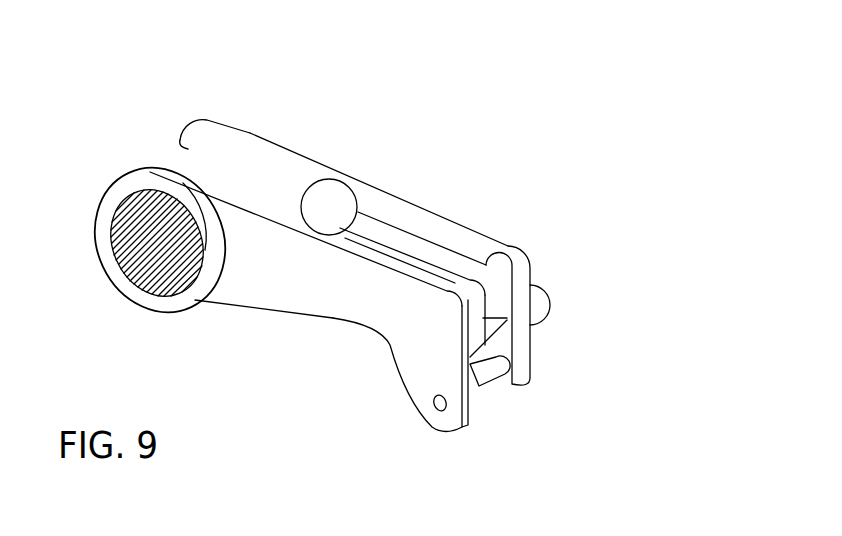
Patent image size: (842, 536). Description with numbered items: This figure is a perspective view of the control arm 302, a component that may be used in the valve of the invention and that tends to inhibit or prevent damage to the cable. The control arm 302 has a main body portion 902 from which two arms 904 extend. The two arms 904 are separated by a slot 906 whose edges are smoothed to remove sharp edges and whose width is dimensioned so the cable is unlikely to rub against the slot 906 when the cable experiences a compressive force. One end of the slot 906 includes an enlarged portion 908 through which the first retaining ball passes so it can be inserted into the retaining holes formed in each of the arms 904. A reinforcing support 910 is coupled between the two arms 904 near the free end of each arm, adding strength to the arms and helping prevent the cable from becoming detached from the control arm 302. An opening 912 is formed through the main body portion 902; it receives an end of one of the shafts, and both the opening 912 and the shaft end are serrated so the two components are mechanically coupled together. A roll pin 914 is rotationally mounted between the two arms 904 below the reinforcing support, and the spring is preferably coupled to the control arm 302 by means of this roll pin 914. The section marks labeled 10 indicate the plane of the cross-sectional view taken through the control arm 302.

The section line 10- 10 is at (630, 337).
The control arm 302 is at (402, 88).
The main body portion 902 is at (180, 140).
The arms 904 is at (505, 253).
The slot 906 is at (427, 220).
The enlarged portion 908 is at (323, 190).
The reinforcing support 910 is at (548, 300).
The opening 912 is at (150, 287).
The roll pin 914 is at (503, 387).